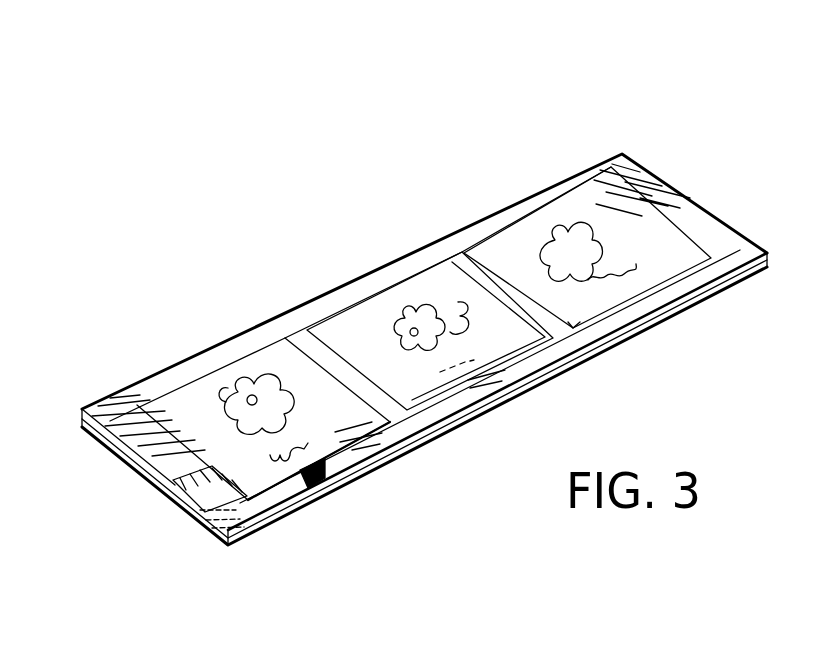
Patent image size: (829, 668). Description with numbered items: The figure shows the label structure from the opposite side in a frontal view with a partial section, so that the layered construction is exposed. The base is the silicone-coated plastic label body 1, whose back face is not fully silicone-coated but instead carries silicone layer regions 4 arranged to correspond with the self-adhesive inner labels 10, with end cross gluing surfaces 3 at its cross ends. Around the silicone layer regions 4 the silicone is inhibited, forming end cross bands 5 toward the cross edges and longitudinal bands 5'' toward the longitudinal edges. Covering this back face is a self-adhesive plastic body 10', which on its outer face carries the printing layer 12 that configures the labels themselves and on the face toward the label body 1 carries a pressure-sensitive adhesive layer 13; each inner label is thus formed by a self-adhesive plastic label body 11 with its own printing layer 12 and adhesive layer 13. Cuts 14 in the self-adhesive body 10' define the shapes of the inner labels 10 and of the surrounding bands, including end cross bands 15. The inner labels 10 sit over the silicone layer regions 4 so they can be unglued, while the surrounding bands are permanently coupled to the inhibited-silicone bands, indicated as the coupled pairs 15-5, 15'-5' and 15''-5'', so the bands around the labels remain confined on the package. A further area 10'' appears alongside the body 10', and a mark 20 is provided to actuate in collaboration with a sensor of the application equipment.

The silicone-coated plastic label body 1 is at (394, 326).
The end cross gluing surfaces 3 is at (394, 326).
The silicone layer regions 4 is at (260, 497).
The end cross bands 5 is at (419, 380).
The longitudinal bands 5'' is at (321, 538).
The self-adhesive inner labels 10 is at (263, 287).
The self-adhesive plastic body 10' is at (430, 326).
The right picture panel 10'' is at (587, 199).
The self-adhesive plastic label body 11 is at (187, 408).
The printing layer 12 is at (248, 427).
The pressure-sensitive adhesive layer 13 is at (320, 408).
The cuts 14 is at (348, 357).
The end cross bands 15 is at (402, 376).
The coupled end cross bands 15-5 is at (667, 208).
The coupled intermediate cross bands 15'-5' is at (412, 210).
The coupled longitudinal bands 15''-5'' is at (528, 199).
The mark 20 is at (738, 245).